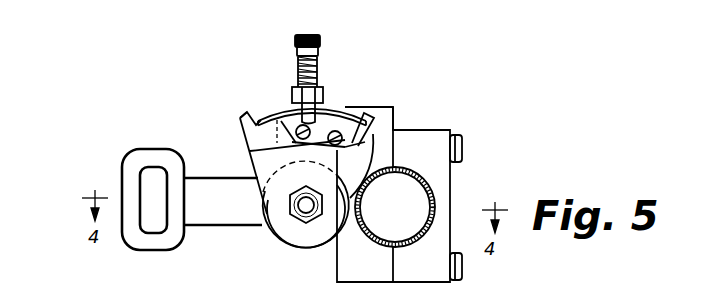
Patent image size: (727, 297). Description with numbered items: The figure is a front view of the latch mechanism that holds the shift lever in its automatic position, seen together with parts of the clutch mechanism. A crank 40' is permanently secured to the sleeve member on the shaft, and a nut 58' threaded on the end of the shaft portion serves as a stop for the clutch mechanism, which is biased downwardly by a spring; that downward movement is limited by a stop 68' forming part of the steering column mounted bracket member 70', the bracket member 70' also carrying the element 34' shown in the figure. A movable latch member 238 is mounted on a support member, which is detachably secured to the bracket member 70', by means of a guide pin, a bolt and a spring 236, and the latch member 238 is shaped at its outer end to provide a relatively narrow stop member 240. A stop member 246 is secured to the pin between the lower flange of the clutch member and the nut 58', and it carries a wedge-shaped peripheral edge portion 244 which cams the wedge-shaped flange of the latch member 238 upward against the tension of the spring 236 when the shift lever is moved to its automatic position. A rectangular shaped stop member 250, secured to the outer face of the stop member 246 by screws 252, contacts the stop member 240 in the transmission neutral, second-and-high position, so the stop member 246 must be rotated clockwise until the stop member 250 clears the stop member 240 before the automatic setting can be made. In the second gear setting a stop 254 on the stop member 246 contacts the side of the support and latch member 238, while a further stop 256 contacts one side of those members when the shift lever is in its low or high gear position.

The spring 236 is at (321, 51).
The movable latch member 238 is at (296, 90).
The stop member 240 is at (323, 95).
The wedge-shaped peripheral edge portion 244 is at (271, 115).
The stop member 246 is at (243, 132).
The rectangular shaped stop member 250 is at (365, 112).
The screws 252 is at (258, 151).
The stop 254 is at (240, 118).
The stop 256 is at (370, 115).
The bracket member 70' is at (410, 194).
The bore 34' is at (420, 207).
The crank 40' is at (192, 204).
The nut 58' is at (287, 223).
The stop 68' is at (306, 216).